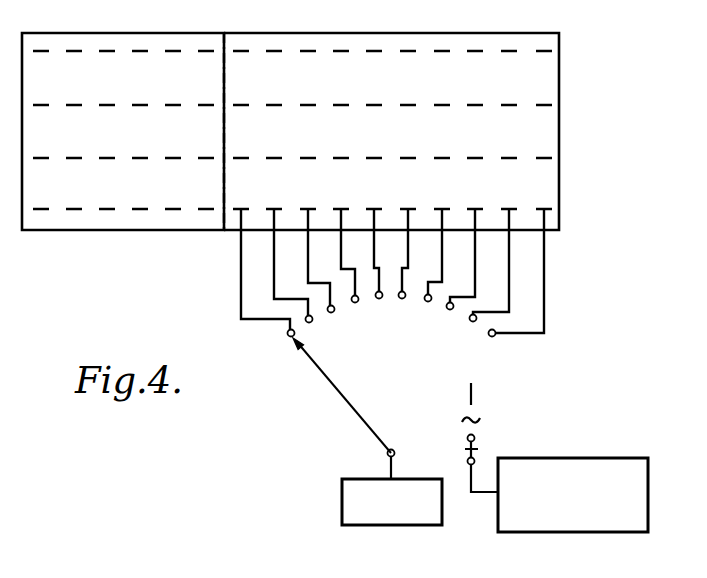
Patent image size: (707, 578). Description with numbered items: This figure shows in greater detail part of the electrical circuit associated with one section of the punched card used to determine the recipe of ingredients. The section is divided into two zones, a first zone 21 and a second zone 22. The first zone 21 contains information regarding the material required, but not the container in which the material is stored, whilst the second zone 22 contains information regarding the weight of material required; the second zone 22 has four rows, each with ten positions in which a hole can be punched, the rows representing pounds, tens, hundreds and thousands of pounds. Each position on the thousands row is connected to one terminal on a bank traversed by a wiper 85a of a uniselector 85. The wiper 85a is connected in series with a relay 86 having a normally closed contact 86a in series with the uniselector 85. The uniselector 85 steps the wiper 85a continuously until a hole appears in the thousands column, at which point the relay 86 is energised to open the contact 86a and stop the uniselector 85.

The zone Z1 21 is at (128, 46).
The zone Z2 22 is at (449, 29).
The uniselector 85 is at (588, 457).
The wiper 85a is at (333, 386).
The relay 86 is at (341, 496).
The normally closed contact 86a is at (476, 445).